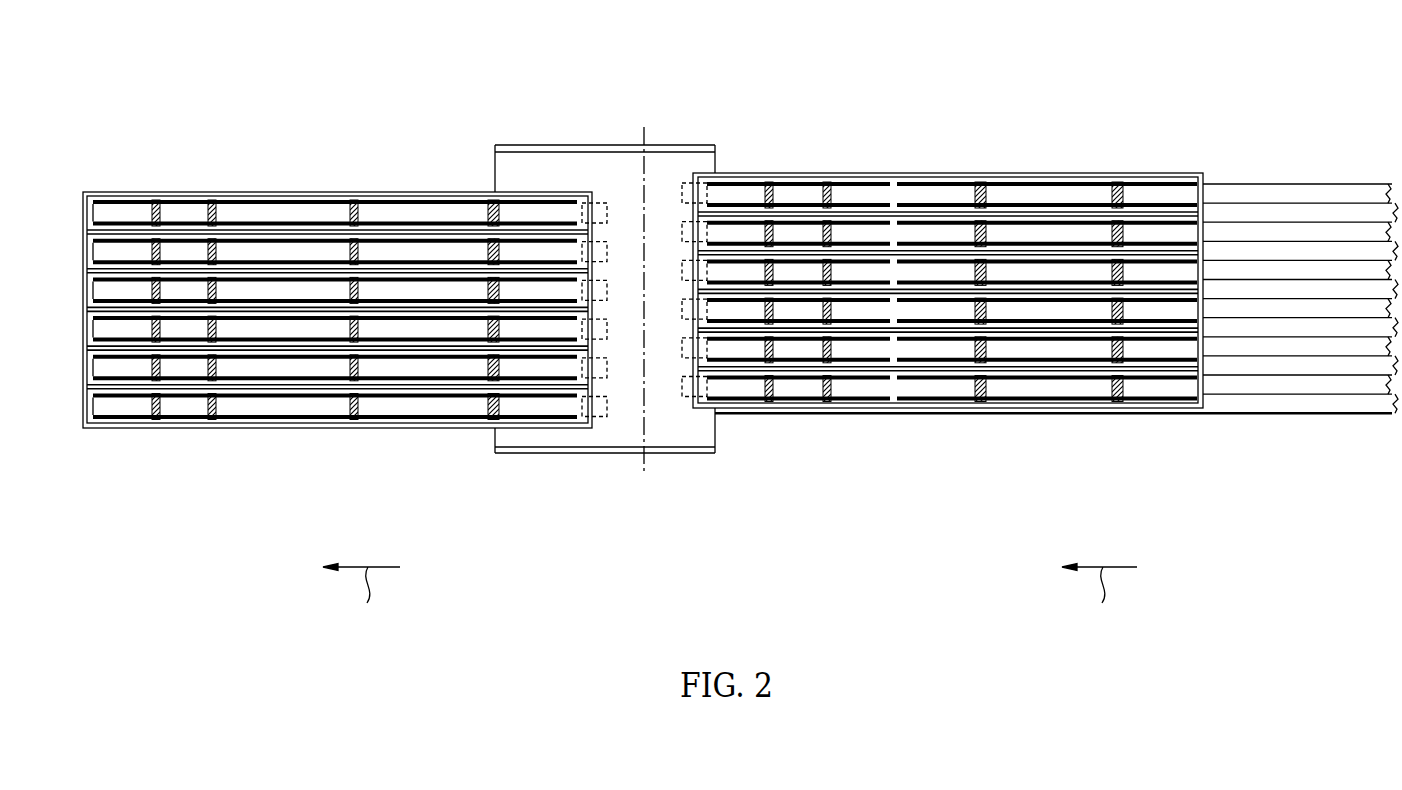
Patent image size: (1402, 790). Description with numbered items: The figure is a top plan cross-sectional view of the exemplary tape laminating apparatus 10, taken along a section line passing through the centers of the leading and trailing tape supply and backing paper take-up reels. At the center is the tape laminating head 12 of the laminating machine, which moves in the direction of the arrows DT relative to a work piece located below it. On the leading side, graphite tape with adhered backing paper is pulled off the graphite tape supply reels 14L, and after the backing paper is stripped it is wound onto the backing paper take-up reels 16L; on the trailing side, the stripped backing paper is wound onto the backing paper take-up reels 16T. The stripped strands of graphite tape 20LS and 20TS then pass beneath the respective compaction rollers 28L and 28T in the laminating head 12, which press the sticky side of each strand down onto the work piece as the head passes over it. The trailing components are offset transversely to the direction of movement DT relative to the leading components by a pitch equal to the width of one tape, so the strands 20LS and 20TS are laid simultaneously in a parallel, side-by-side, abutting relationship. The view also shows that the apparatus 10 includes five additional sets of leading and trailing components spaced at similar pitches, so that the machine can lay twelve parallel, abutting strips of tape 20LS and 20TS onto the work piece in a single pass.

The apparatus 10 is at (740, 335).
The tape laminating head 12 is at (542, 145).
The graphite tape supply reel 14L is at (358, 218).
The backing paper take-up reel 16L is at (159, 218).
The backing paper take-up reel 16T is at (822, 273).
The strand of graphite tape stripped of backing paper 20LS is at (1265, 213).
The strand of graphite tape stripped of backing paper 20TS is at (1366, 193).
The compaction roller 28L is at (614, 500).
The compaction roller 28T is at (694, 493).